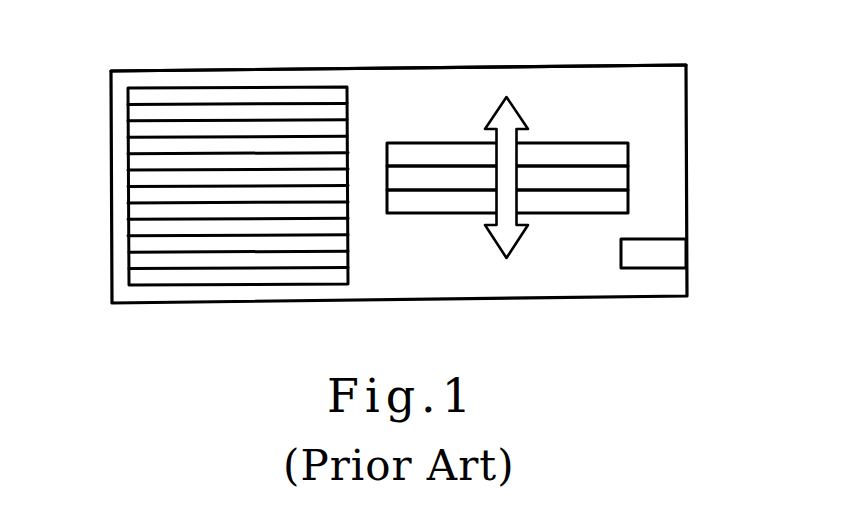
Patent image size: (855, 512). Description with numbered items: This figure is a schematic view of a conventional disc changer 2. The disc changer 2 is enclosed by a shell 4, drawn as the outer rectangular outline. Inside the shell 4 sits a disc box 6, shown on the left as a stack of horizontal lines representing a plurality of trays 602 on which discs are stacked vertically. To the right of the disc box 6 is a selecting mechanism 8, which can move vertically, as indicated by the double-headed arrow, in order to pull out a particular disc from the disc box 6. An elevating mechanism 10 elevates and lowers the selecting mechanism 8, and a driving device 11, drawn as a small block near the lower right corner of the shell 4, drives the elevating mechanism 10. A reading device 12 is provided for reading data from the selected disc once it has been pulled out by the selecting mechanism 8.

The disc changer 2 is at (704, 60).
The shell 4 is at (513, 66).
The disc box 6 is at (182, 158).
The trays 602 is at (140, 203).
The selecting mechanism 8 is at (617, 157).
The reading device 12 is at (617, 182).
The elevating mechanism 10 is at (617, 203).
The driving device 11 is at (682, 253).